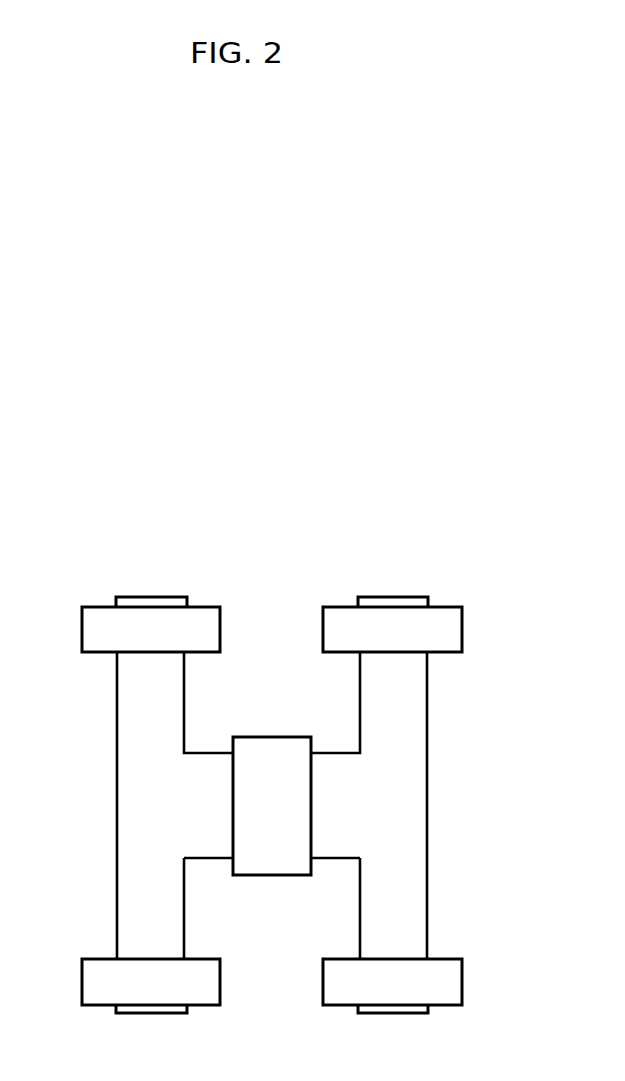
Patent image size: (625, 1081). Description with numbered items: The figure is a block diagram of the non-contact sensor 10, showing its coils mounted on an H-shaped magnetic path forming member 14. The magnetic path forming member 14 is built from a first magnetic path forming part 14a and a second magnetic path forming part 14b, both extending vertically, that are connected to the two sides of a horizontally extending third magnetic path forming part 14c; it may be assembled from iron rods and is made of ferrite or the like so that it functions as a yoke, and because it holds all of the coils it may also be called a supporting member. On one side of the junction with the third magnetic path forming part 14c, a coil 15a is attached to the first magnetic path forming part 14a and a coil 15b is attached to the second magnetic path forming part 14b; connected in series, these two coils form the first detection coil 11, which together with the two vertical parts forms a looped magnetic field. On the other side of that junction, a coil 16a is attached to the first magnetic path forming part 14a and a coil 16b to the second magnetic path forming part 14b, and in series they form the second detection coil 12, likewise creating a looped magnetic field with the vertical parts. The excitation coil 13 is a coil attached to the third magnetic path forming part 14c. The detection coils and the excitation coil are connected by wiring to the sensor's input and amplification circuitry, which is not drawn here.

The non-contact sensor 10 is at (428, 521).
The first detection coil 11 is at (466, 623).
The second detection coil 12 is at (466, 981).
The excitation coil 13 is at (312, 789).
The magnetic path forming member 14 is at (444, 869).
The first magnetic path forming part 14a is at (116, 828).
The second magnetic path forming part 14b is at (428, 820).
The third magnetic path forming part 14c is at (216, 753).
The coil 15a is at (204, 606).
The coil 15b is at (339, 606).
The coil 16a is at (205, 1006).
The coil 16b is at (340, 1006).